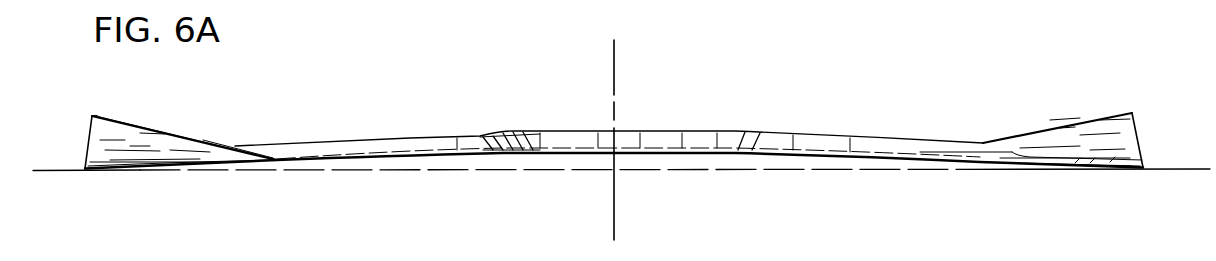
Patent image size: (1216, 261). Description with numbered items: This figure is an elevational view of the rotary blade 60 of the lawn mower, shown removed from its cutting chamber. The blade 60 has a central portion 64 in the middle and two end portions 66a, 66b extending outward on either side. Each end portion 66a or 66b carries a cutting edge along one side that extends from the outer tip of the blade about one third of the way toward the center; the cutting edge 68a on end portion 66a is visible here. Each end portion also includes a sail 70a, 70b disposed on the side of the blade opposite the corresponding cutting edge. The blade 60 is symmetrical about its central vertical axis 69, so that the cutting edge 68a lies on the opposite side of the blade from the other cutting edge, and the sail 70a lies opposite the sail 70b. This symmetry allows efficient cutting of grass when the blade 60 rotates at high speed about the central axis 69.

The blade 60 is at (590, 122).
The central portion 64 is at (603, 147).
The end portion 66a is at (1058, 171).
The end portion 66b is at (143, 170).
The cutting edge 68a is at (1100, 166).
The central axis 69 is at (616, 63).
The sail 70a is at (1120, 129).
The sail 70b is at (150, 140).